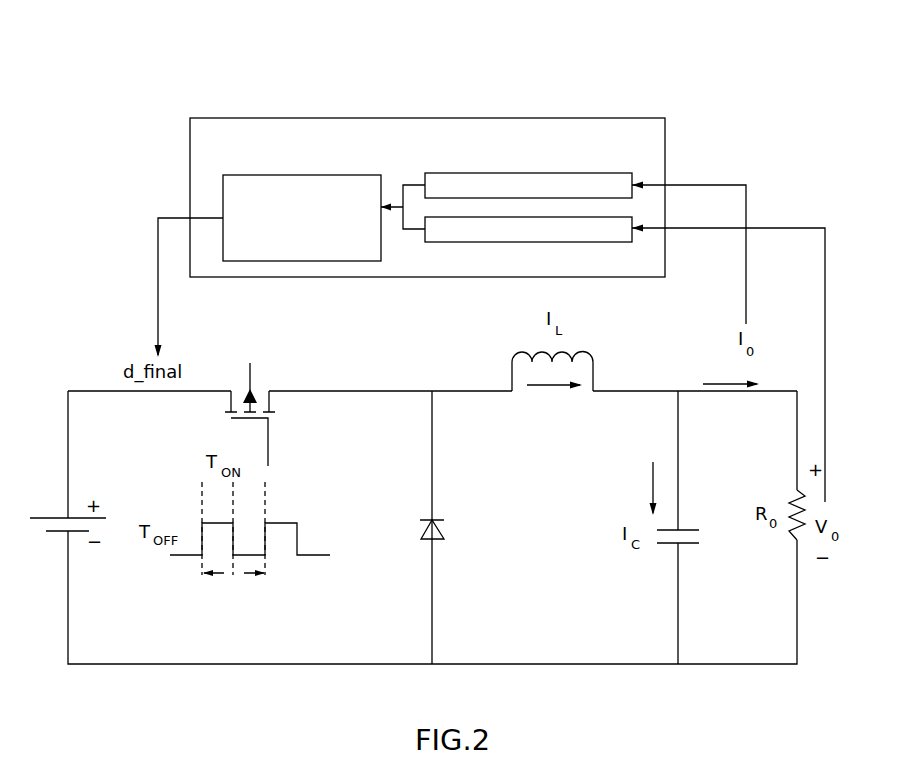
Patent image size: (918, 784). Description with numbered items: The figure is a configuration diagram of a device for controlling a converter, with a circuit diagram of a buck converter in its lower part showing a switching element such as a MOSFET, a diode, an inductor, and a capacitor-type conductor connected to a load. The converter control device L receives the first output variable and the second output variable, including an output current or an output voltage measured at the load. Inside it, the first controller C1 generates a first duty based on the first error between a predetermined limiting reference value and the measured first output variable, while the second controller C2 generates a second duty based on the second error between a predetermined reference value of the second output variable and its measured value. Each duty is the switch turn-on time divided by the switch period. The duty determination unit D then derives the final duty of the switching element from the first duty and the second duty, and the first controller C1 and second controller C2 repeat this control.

The converter control device L is at (488, 118).
The duty determination unit D is at (304, 175).
The first controller C1 is at (570, 173).
The second controller C2 is at (487, 242).